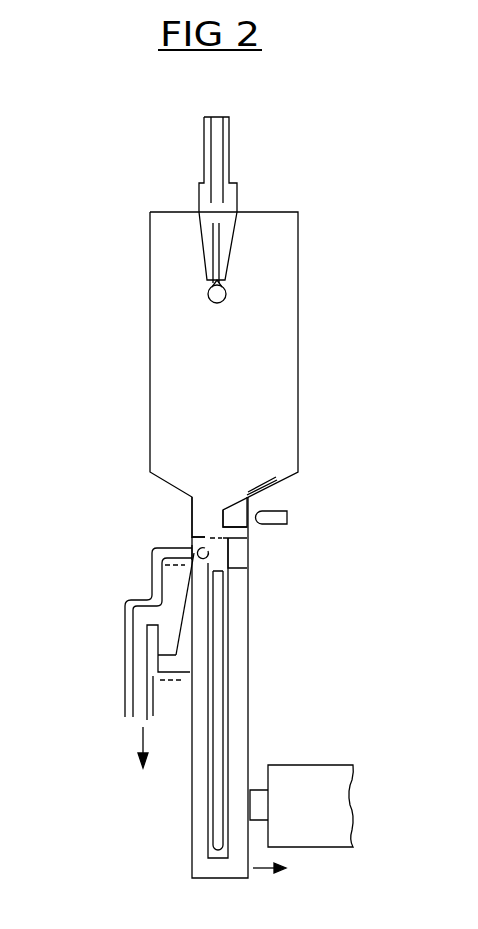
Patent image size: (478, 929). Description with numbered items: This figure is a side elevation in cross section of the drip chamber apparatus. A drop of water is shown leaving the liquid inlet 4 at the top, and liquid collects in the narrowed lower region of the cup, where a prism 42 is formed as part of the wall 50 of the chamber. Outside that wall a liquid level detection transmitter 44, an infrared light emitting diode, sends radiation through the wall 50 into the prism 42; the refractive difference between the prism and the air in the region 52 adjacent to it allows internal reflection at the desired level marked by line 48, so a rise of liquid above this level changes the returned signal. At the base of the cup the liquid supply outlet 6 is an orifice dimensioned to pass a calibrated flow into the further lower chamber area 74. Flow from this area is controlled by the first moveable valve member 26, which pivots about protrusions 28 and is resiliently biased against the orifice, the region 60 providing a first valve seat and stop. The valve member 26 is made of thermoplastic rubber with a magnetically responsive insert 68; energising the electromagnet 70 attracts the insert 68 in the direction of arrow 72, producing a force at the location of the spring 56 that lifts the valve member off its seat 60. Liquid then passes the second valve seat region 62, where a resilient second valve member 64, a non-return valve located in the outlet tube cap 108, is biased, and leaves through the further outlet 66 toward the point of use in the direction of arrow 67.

The liquid inlet 4 is at (218, 281).
The liquid supply outlet 6 is at (207, 542).
The first moveable valve member 26 is at (227, 723).
The protrusions 28 is at (200, 552).
The prism 42 is at (249, 522).
The liquid level detection transmitter 44 is at (288, 512).
The desired level line 48 is at (250, 517).
The wall of the drip chamber 50 is at (250, 495).
The region adjacent the prism 52 is at (208, 510).
The spring 56 is at (200, 615).
The first valve seat region 60 is at (196, 615).
The second valve seat region 62 is at (192, 610).
The second valve member 64 is at (177, 640).
The further outlet 66 is at (127, 706).
The flow direction arrow 67 is at (141, 763).
The magnetically responsive insert 68 is at (218, 828).
The electromagnet 70 is at (277, 814).
The valve movement arrow 72 is at (284, 872).
The further lower chamber area 74 is at (237, 768).
The outlet tube cap 108 is at (124, 602).